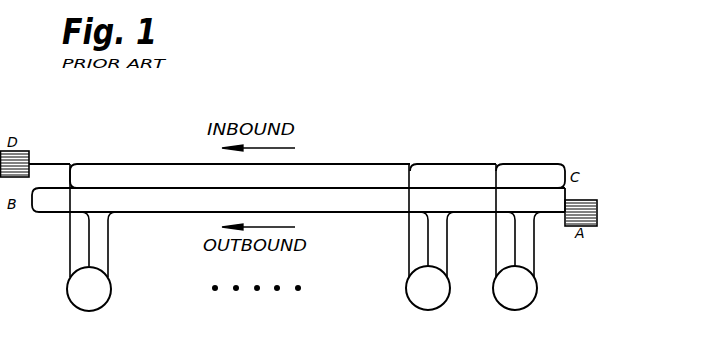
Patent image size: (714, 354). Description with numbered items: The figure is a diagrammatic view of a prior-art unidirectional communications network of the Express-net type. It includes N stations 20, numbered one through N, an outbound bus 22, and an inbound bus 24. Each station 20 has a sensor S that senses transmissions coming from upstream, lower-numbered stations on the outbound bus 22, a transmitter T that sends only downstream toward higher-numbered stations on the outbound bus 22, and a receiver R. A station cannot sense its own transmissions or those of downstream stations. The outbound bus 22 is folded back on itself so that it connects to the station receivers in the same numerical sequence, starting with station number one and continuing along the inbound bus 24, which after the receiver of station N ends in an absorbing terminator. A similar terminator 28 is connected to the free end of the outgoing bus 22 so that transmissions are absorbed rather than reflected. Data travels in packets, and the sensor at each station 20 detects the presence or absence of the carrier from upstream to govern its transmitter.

The station 20 is at (66, 296).
The outbound bus 22 is at (153, 213).
The inbound bus 24 is at (163, 164).
The terminator 28 is at (587, 200).